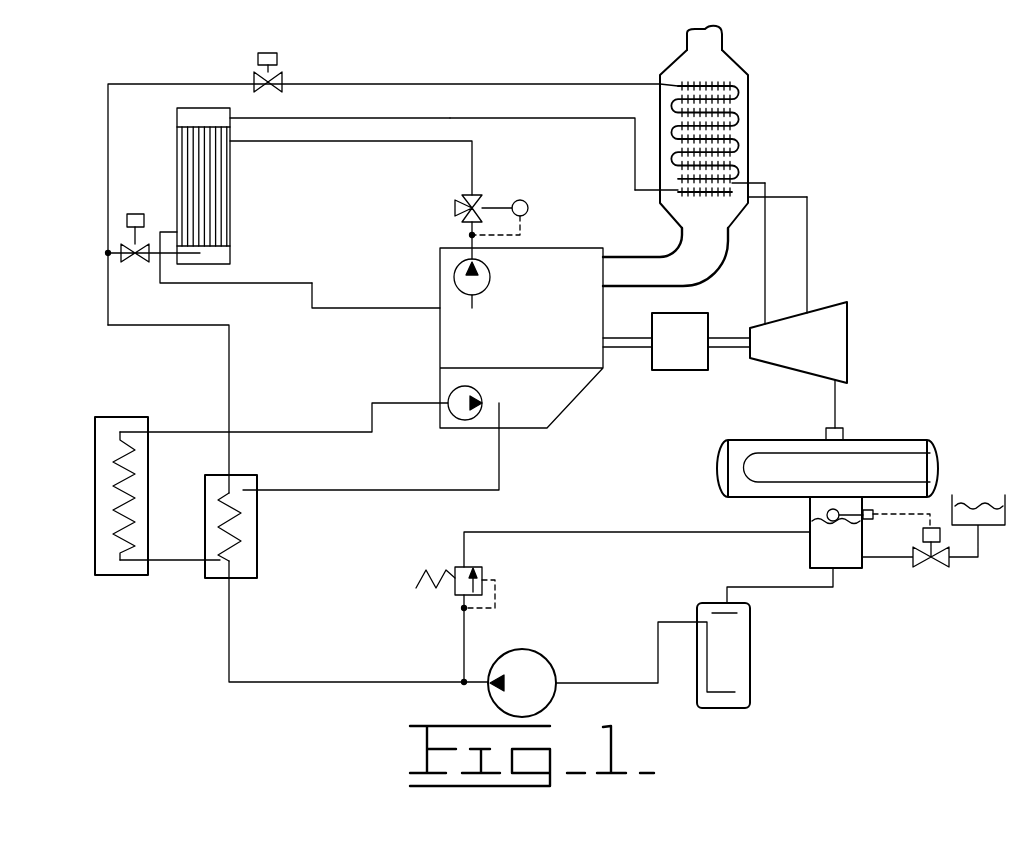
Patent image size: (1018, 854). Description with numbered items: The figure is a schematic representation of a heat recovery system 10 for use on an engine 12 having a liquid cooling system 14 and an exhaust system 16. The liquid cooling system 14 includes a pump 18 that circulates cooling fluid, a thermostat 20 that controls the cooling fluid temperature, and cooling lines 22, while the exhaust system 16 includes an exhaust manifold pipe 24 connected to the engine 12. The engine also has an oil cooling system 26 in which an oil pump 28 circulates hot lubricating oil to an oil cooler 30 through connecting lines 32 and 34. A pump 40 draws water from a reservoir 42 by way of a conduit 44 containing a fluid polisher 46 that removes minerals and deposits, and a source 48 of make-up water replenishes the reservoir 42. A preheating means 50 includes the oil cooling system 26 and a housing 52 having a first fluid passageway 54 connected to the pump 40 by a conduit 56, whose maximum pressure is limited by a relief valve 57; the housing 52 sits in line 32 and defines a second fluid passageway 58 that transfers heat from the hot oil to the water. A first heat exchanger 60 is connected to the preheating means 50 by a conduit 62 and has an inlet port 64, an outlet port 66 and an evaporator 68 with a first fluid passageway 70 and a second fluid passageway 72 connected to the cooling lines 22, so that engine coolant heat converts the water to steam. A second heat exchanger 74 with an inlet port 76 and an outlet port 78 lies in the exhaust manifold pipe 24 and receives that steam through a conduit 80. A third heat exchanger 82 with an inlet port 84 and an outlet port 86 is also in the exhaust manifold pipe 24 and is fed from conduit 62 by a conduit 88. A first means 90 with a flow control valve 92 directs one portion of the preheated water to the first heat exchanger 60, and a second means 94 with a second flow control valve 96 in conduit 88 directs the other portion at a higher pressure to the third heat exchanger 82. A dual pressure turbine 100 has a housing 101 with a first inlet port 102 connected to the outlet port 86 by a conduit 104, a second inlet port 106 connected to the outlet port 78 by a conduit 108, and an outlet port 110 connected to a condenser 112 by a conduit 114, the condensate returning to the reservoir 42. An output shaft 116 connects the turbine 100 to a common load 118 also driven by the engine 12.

The heat recovery system 10 is at (86, 170).
The engine 12 is at (510, 330).
The liquid cooling system 14 is at (423, 231).
The exhaust system 16 is at (782, 121).
The pump 18 is at (489, 277).
The thermostat 20 is at (480, 200).
The cooling lines 22 is at (472, 158).
The exhaust manifold pipe 24 is at (750, 148).
The oil cooling system 26 is at (160, 403).
The oil pump 28 is at (455, 395).
The oil cooler 30 is at (94, 483).
The connecting line 32 is at (333, 488).
The connecting line 34 is at (284, 415).
The pump 40 is at (538, 657).
The reservoir 42 is at (810, 548).
The conduit 44 is at (820, 588).
The fluid polisher 46 is at (750, 660).
The source of make-up water 48 is at (978, 567).
The preheating means 50 is at (262, 582).
The housing 52 is at (258, 525).
The first fluid passageway 54 is at (241, 540).
The conduit 56 is at (230, 652).
The relief valve 57 is at (487, 575).
The second fluid passageway 58 is at (246, 503).
The first heat exchanger 60 is at (166, 166).
The conduit 62 is at (232, 366).
The inlet port 64 is at (178, 254).
The outlet port 66 is at (232, 117).
The evaporator 68 is at (218, 186).
The first fluid passageway 70 is at (190, 116).
The second fluid passageway 72 is at (230, 150).
The second heat exchanger 74 is at (689, 207).
The inlet port 76 is at (656, 197).
The outlet port 78 is at (752, 205).
The conduit 80 is at (579, 118).
The third heat exchanger 82 is at (686, 68).
The inlet port 84 is at (657, 84).
The outlet port 86 is at (766, 183).
The conduit 88 is at (148, 80).
The first means for controllably directing 90 is at (102, 216).
The flow control valve 92 is at (132, 237).
The second means for controllably directing 94 is at (236, 61).
The second flow control valve 96 is at (270, 80).
The dual pressure turbine 100 is at (784, 357).
The housing 101 is at (848, 345).
The first inlet port 102 is at (764, 318).
The conduit 104 is at (741, 253).
The second inlet port 106 is at (808, 305).
The conduit 108 is at (808, 263).
The outlet port 110 is at (838, 385).
The condenser 112 is at (800, 482).
The conduit 114 is at (834, 396).
The output shaft 116 is at (740, 348).
The common load 118 is at (662, 358).